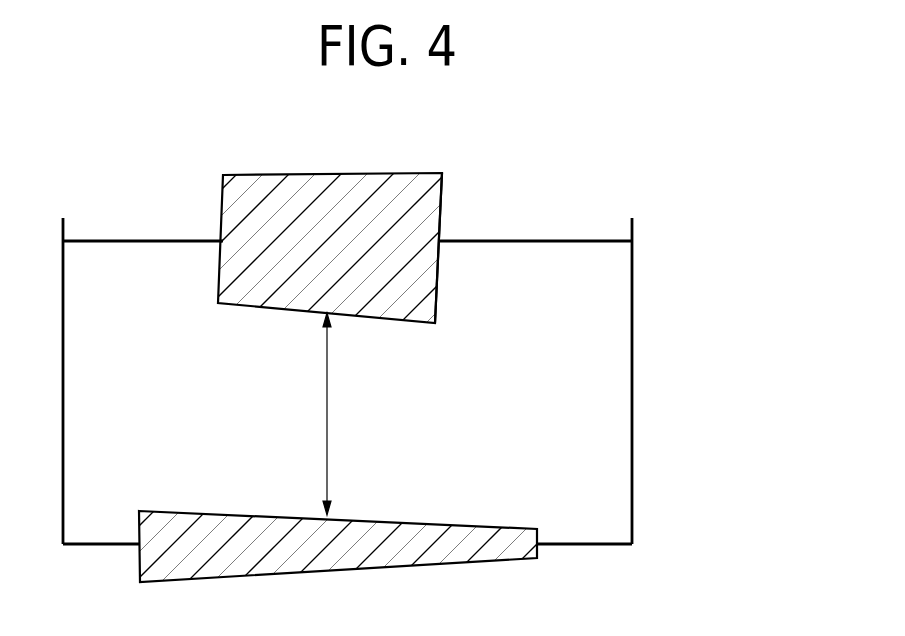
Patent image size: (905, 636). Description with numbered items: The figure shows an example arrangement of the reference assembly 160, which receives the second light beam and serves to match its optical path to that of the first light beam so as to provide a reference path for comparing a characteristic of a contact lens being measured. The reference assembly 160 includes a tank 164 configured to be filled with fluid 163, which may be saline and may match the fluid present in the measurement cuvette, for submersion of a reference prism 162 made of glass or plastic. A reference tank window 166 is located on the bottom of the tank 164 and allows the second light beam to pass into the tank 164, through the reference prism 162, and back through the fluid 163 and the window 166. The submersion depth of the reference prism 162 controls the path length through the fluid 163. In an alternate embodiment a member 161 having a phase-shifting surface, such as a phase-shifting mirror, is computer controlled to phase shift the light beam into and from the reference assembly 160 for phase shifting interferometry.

The reference assembly 160 is at (401, 355).
The member 161 is at (400, 173).
The reference prism 162 is at (440, 198).
The fluid 163 is at (535, 240).
The tank 164 is at (634, 330).
The reference tank window 166 is at (523, 558).